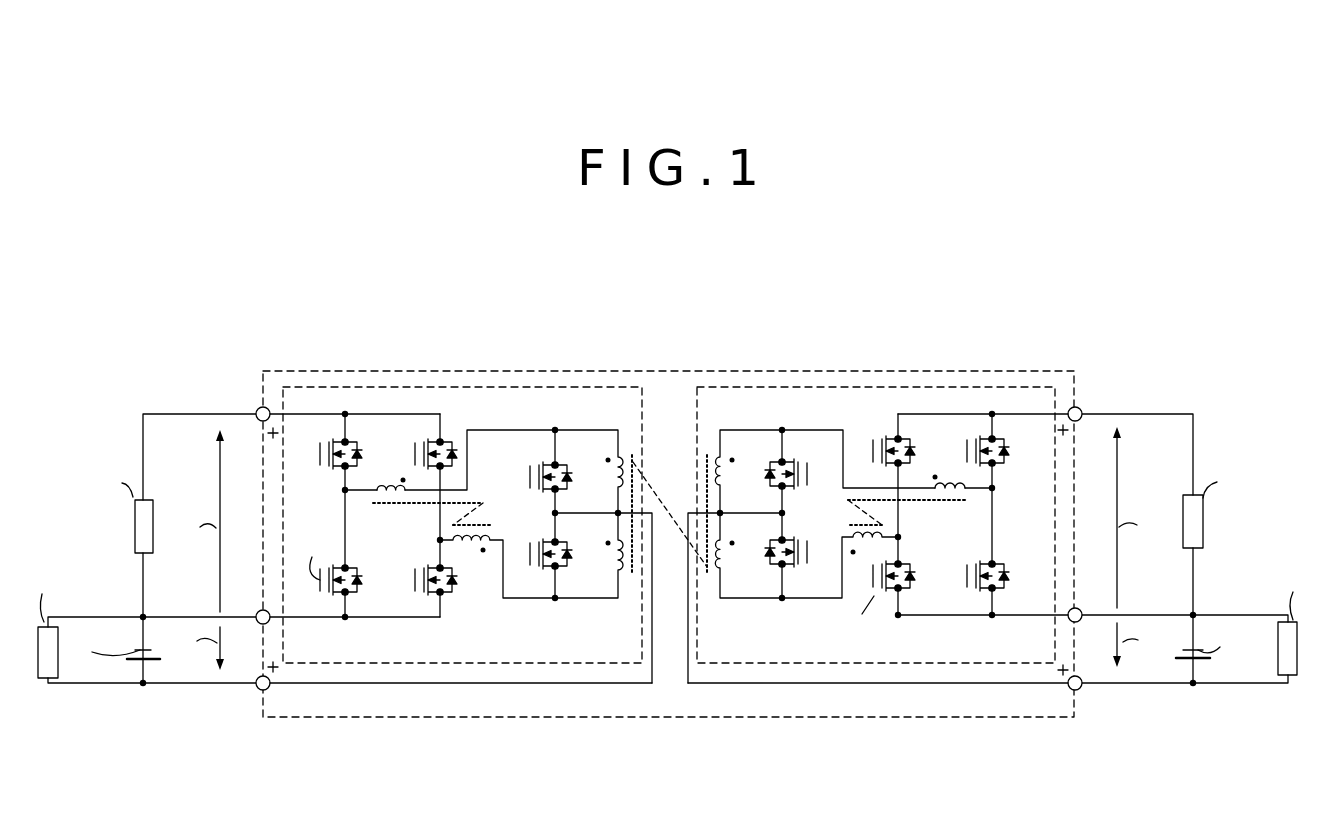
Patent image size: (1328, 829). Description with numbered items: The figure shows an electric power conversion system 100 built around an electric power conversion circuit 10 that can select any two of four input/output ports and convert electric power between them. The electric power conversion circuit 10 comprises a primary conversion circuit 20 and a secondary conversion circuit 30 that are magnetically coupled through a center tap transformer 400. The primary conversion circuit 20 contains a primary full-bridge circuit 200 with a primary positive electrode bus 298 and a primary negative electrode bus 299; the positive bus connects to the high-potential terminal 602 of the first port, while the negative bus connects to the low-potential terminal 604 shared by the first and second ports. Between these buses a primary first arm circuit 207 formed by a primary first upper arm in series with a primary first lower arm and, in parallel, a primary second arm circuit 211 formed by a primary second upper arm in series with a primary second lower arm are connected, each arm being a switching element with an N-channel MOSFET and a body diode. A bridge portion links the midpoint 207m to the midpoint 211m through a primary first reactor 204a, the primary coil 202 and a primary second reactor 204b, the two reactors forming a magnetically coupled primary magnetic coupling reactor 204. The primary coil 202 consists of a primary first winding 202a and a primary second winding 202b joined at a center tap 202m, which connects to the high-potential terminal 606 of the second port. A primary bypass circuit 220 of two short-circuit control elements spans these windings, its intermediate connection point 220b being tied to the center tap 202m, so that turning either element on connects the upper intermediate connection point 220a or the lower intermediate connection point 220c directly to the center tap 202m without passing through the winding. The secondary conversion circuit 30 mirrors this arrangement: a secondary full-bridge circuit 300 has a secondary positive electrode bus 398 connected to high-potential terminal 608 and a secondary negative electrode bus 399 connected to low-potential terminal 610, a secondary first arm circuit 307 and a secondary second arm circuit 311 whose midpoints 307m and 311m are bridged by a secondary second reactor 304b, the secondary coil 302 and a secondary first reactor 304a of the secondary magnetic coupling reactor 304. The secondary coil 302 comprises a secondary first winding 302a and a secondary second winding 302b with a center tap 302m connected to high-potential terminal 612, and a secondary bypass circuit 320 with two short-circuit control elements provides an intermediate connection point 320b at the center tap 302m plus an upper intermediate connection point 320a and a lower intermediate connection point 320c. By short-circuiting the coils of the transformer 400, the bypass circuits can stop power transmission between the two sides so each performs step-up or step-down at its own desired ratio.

The electric power conversion system 100 is at (220, 277).
The electric power conversion circuit 10 is at (995, 370).
The primary conversion circuit 20 is at (445, 368).
The secondary conversion circuit 30 is at (893, 369).
The primary full-bridge circuit 200 is at (525, 387).
The secondary full-bridge circuit 300 is at (813, 387).
The primary coil 202 is at (609, 467).
The primary first winding 202a is at (612, 462).
The primary second winding 202b is at (610, 575).
The center tap 202m is at (653, 535).
The secondary coil 302 is at (737, 464).
The secondary first winding 302a is at (728, 470).
The secondary second winding 302b is at (723, 572).
The center tap 302m is at (697, 518).
The primary magnetic coupling reactor 204 is at (452, 522).
The primary first reactor 204a is at (383, 482).
The primary second reactor 204b is at (483, 555).
The secondary magnetic coupling reactor 304 is at (882, 491).
The secondary first reactor 304a is at (935, 475).
The secondary second reactor 304b is at (856, 553).
The primary first arm circuit 207 is at (331, 612).
The midpoint 207m is at (345, 490).
The primary second arm circuit 211 is at (426, 612).
The midpoint 211m is at (440, 540).
The primary bypass circuit 220 is at (565, 437).
The upper intermediate connection point 220a is at (553, 428).
The intermediate connection point 220b is at (552, 511).
The lower intermediate connection point 220c is at (555, 600).
The secondary first arm circuit 307 is at (875, 610).
The midpoint 307m is at (902, 543).
The secondary second arm circuit 311 is at (966, 610).
The midpoint 311m is at (998, 486).
The secondary bypass circuit 320 is at (773, 435).
The upper intermediate connection point 320a is at (785, 428).
The intermediate connection point 320b is at (780, 514).
The lower intermediate connection point 320c is at (781, 601).
The primary positive electrode bus 298 is at (295, 413).
The primary negative electrode bus 299 is at (293, 619).
The secondary positive electrode bus 398 is at (994, 412).
The secondary negative electrode bus 399 is at (1023, 618).
The transformer 400 is at (676, 481).
The high-potential terminal 602 is at (257, 410).
The low-potential terminal 604 is at (257, 614).
The high-potential terminal 606 is at (258, 690).
The high-potential terminal 608 is at (1081, 407).
The low-potential terminal 610 is at (1082, 612).
The high-potential terminal 612 is at (1080, 690).